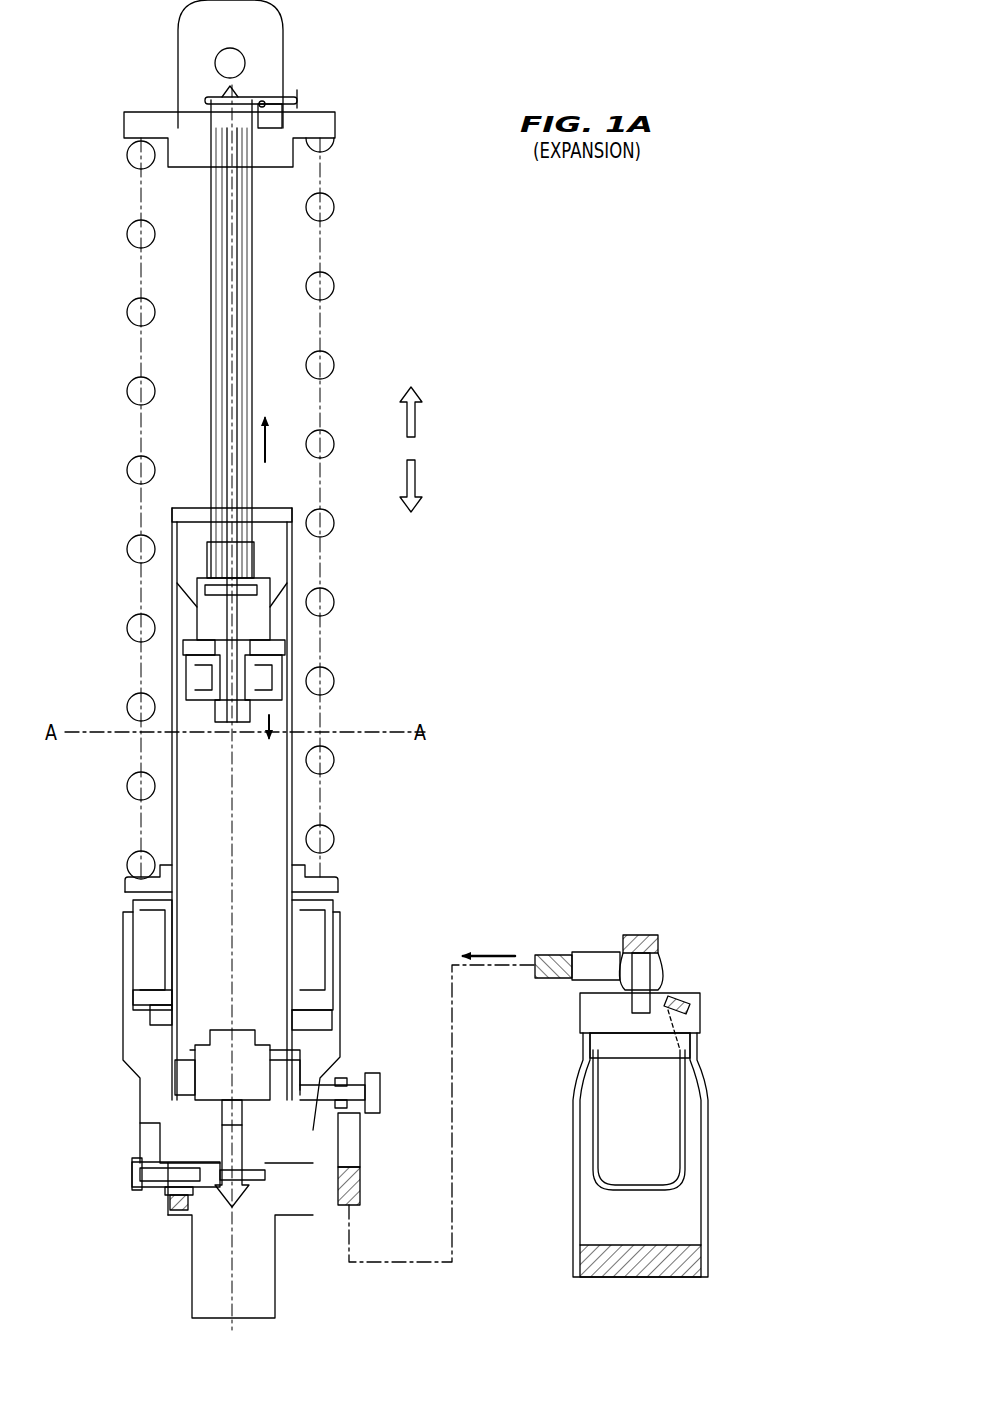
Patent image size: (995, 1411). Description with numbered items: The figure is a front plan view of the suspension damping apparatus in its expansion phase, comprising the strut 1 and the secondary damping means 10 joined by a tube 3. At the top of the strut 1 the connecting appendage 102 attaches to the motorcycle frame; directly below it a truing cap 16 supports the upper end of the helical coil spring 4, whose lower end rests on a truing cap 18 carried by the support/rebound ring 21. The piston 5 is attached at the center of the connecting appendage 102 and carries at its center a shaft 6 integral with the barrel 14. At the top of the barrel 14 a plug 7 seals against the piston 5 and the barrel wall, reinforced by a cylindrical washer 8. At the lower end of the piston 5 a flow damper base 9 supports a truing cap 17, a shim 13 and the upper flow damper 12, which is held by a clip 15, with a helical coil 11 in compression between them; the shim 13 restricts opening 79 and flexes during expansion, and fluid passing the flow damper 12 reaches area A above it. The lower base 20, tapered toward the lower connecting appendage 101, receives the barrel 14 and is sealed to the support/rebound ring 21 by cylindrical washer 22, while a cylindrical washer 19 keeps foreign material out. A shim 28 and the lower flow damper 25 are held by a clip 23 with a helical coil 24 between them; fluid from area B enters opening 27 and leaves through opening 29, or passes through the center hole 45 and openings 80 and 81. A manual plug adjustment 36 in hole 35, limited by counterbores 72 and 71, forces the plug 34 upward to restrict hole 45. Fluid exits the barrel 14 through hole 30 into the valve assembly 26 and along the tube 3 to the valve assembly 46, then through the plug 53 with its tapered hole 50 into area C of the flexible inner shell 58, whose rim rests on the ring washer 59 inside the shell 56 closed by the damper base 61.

The strut 1 is at (380, 258).
The connecting appendage 102 is at (270, 26).
The truing cap 16 is at (333, 124).
The piston 5 is at (212, 248).
The shaft 6 is at (228, 290).
The helical coil spring 4 is at (328, 207).
The plug 7 is at (275, 508).
The cylindrical washer 8 is at (172, 516).
The barrel 14 is at (175, 812).
The area A is at (190, 607).
The flow damper base 9 is at (258, 618).
The truing cap 17 is at (265, 648).
The helical coil 11 is at (203, 675).
The upper flow damper 12 is at (268, 682).
The clip 15 is at (215, 712).
The opening 79 is at (272, 700).
The shim 13 is at (268, 735).
The area B is at (268, 792).
The truing cap 18 is at (333, 885).
The cylindrical washer 19 is at (340, 918).
The base 20 is at (340, 950).
The support/rebound ring 21 is at (133, 940).
The cylindrical washer 22 is at (135, 988).
The clip 23 is at (265, 1040).
The helical coil 24 is at (262, 1055).
The lower flow damper 25 is at (272, 1068).
The opening 27 is at (198, 1062).
The shim 28 is at (185, 1100).
The hole 30 is at (300, 1092).
The valve assembly 26 is at (380, 1098).
The tube 3 is at (352, 1188).
The center hole 45 is at (225, 1108).
The opening 80 is at (218, 1116).
The plug 34 is at (225, 1148).
The connecting appendage 101 is at (265, 1300).
The manual plug adjustment 36 is at (135, 1182).
The counterbore 72 is at (148, 1190).
The hole 35 is at (162, 1195).
The counterbore 71 is at (180, 1210).
The opening 29 is at (282, 1112).
The opening 81 is at (268, 1135).
The secondary damping means 10 is at (580, 912).
The valve assembly 46 is at (640, 935).
The plug 53 is at (700, 995).
The hole 50 is at (680, 995).
The ring washer 59 is at (700, 1045).
The shell 56 is at (708, 1228).
The flexible inner shell 58 is at (593, 1108).
The area C is at (675, 1128).
The damper base 61 is at (640, 1272).